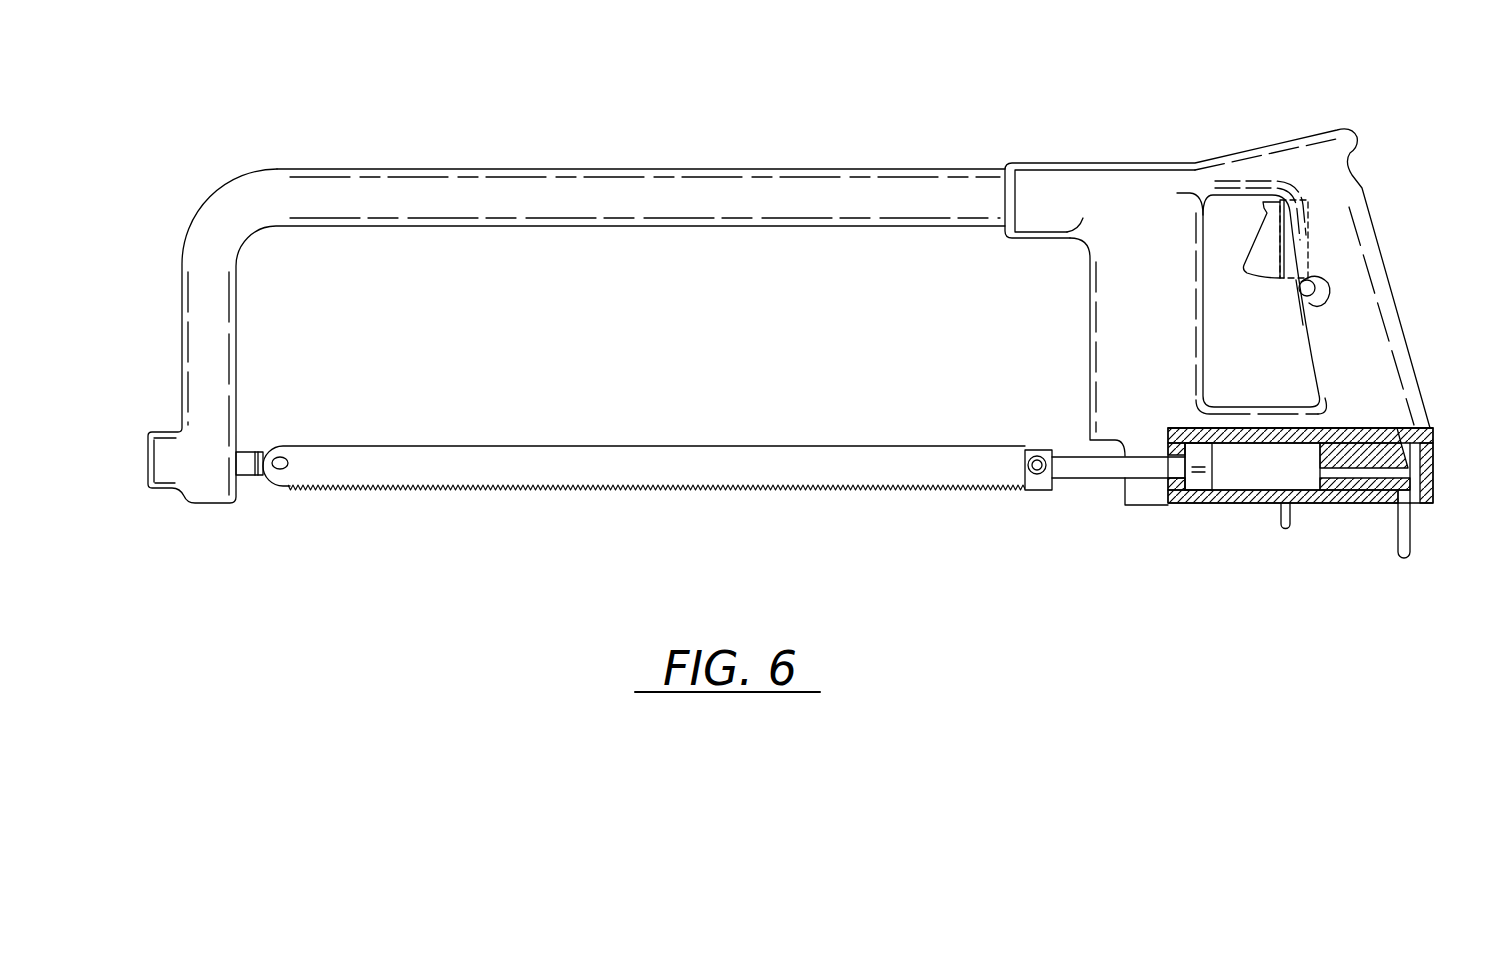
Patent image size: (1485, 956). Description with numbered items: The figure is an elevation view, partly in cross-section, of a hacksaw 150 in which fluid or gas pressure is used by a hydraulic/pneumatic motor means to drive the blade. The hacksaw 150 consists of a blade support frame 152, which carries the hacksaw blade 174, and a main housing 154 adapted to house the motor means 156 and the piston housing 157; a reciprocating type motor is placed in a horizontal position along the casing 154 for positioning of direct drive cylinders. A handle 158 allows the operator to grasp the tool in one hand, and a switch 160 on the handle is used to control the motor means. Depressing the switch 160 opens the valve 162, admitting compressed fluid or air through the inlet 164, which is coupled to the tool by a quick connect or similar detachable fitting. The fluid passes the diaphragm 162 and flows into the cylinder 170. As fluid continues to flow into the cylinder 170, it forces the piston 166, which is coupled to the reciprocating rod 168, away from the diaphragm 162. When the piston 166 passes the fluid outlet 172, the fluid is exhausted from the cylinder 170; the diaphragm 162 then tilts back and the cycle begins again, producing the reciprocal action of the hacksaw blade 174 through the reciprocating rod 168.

The hacksaw 150 is at (648, 162).
The blade support frame 152 is at (390, 185).
The main housing 154 is at (1108, 290).
The motor means 156 is at (1360, 417).
The piston housing 157 is at (1257, 513).
The handle 158 is at (1360, 227).
The switch 160 is at (1262, 240).
The valve 162 is at (1420, 448).
The inlet 164 is at (1405, 536).
The piston 166 is at (1195, 479).
The reciprocating rod 168 is at (1070, 473).
The cylinder 170 is at (1233, 483).
The fluid outlet 172 is at (1296, 539).
The hacksaw blade 174 is at (755, 446).